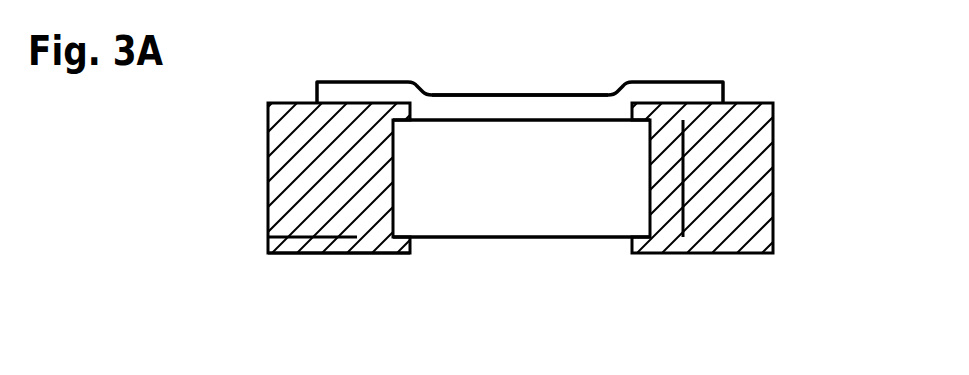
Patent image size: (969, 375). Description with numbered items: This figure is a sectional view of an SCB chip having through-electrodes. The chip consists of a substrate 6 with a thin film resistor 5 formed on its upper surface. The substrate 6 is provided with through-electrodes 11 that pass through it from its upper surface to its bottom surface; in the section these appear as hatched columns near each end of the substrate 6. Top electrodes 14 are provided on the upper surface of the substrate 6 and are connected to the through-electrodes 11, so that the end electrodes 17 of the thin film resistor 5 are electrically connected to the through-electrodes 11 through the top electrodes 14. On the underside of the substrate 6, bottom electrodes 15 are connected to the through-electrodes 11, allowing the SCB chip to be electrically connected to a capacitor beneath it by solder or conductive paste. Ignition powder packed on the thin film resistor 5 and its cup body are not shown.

The thin film resistor 5 is at (505, 108).
The substrate 6 is at (470, 202).
The through-electrodes 11 is at (676, 175).
The top electrodes 14 is at (750, 103).
The bottom electrodes 15 is at (733, 254).
The end electrodes 17 is at (686, 81).